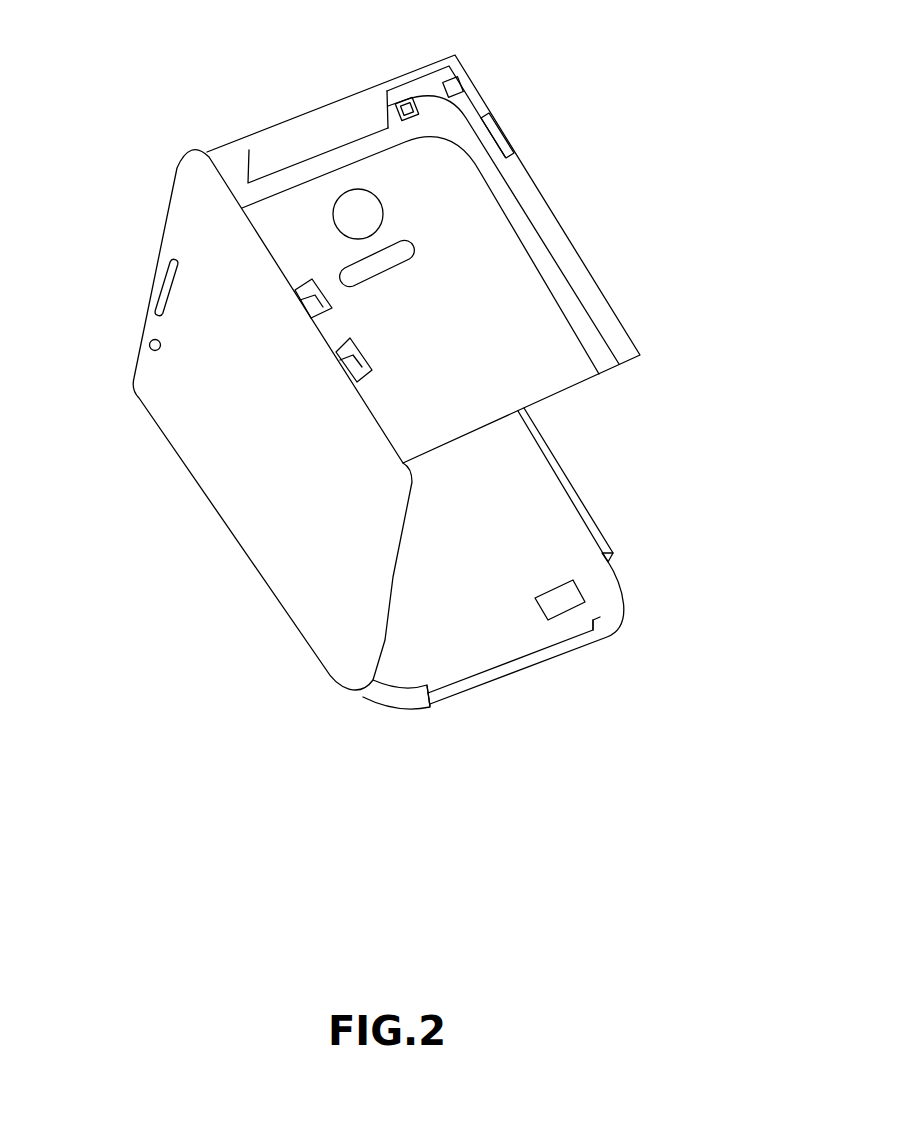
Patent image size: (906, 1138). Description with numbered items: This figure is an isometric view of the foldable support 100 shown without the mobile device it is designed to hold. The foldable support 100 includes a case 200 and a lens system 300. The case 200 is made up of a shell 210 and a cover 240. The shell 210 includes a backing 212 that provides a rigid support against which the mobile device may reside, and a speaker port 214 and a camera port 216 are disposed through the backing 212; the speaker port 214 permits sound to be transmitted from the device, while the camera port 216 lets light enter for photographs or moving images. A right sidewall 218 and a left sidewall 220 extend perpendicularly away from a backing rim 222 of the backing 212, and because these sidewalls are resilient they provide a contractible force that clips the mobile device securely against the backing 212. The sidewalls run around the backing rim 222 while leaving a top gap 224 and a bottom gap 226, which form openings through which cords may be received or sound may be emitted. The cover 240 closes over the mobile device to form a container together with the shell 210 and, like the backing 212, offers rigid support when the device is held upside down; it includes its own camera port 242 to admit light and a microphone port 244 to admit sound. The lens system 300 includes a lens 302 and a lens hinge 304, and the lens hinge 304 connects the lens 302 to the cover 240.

The foldable support 100 is at (485, 90).
The case 200 is at (207, 497).
The shell 210 is at (503, 677).
The backing 212 is at (523, 463).
The speaker port 214 is at (584, 600).
The camera port 216 is at (353, 189).
The right sidewall 218 is at (593, 530).
The left sidewall 220 is at (363, 694).
The backing rim 222 is at (567, 643).
The top gap 224 is at (250, 150).
The bottom gap 226 is at (428, 698).
The cover 240 is at (293, 598).
The camera port 242 is at (150, 349).
The microphone port 244 is at (170, 266).
The lens system 300 is at (543, 190).
The lens 302 is at (562, 257).
The lens hinge 304 is at (295, 293).